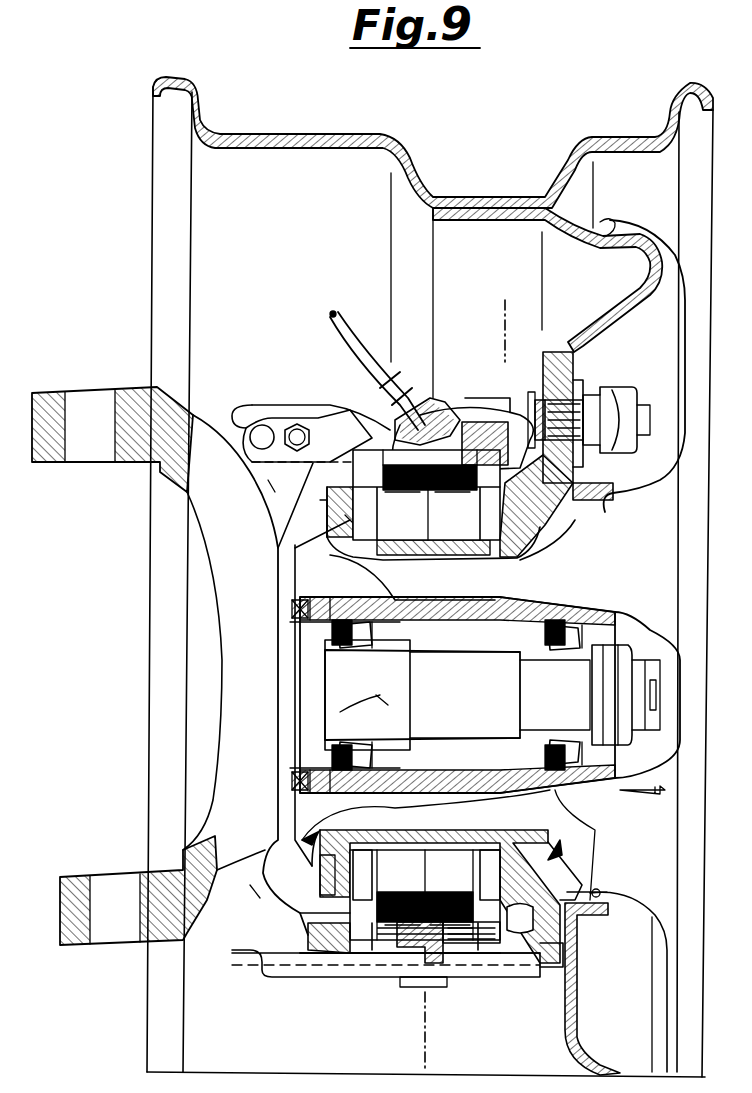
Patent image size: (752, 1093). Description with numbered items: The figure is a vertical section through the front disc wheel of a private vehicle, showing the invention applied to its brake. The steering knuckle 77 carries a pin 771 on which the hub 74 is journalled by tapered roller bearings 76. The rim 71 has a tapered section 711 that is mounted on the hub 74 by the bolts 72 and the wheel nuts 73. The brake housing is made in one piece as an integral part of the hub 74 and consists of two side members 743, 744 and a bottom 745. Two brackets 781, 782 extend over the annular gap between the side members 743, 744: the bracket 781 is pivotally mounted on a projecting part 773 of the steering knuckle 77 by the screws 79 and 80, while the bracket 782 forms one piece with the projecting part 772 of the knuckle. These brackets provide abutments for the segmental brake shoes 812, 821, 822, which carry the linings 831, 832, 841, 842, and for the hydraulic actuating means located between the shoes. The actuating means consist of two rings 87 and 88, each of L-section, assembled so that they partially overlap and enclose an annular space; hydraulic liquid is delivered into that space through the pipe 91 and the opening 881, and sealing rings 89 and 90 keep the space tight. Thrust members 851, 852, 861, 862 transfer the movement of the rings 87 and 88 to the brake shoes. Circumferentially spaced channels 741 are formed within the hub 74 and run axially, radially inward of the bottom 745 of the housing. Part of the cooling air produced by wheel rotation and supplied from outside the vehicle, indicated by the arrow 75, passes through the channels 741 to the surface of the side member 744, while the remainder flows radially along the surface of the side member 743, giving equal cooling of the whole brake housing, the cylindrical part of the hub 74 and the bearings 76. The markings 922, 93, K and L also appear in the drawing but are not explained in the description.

The rim 71 is at (430, 577).
The tapered section 711 is at (559, 344).
The bolts 72 is at (555, 368).
The wheel nuts 73 is at (616, 399).
The hub 74 is at (466, 476).
The channels 741 is at (583, 845).
The side member 743 is at (590, 529).
The side member 744 is at (188, 556).
The bottom 745 is at (436, 887).
The arrow 75 is at (502, 695).
The tapered roller bearings 76 is at (343, 715).
The steering knuckle 77 is at (167, 666).
The pin 771 is at (205, 721).
The projecting part 772 is at (141, 843).
The projecting part 773 is at (148, 522).
The bracket 781 is at (476, 359).
The bracket 782 is at (534, 985).
The screw 79 is at (310, 374).
The screw 80 is at (298, 368).
The segmental brake shoe 812 is at (426, 521).
The segmental brake shoe 821 is at (448, 883).
The segmental brake shoe 822 is at (445, 507).
The lining 831 is at (307, 875).
The lining 832 is at (330, 546).
The lining 841 is at (616, 982).
The lining 842 is at (447, 540).
The thrust member 851 is at (400, 512).
The thrust member 852 is at (401, 892).
The thrust member 861 is at (452, 512).
The thrust member 862 is at (450, 892).
The ring 87 is at (382, 1006).
The ring 88 is at (481, 992).
The opening 881 is at (426, 359).
The sealing ring 89 is at (379, 992).
The sealing ring 90 is at (434, 992).
The pipe 91 is at (377, 339).
The bolt hole 922 is at (258, 367).
The cover 93 is at (393, 1019).
The section line K is at (485, 331).
The section line L is at (408, 1032).